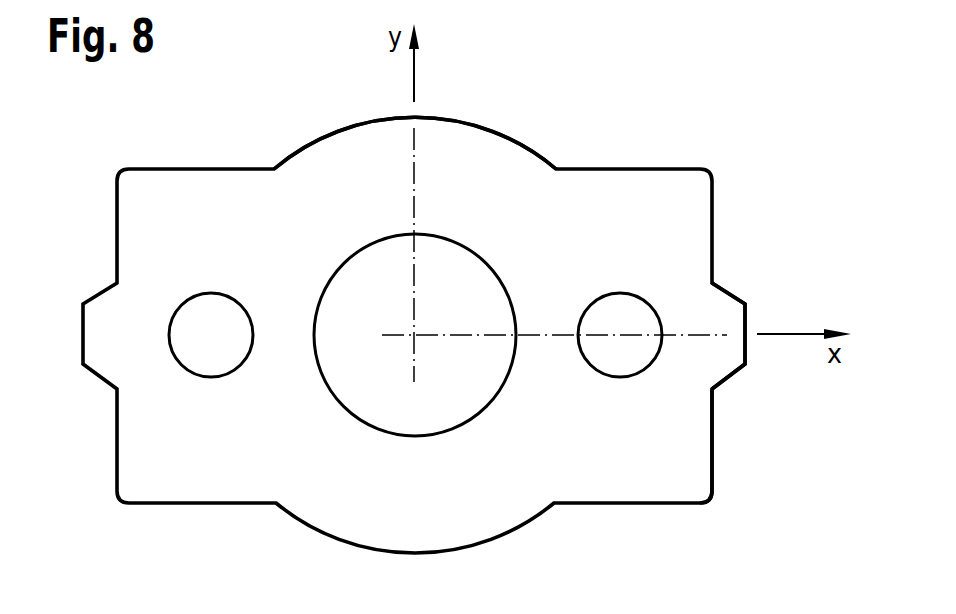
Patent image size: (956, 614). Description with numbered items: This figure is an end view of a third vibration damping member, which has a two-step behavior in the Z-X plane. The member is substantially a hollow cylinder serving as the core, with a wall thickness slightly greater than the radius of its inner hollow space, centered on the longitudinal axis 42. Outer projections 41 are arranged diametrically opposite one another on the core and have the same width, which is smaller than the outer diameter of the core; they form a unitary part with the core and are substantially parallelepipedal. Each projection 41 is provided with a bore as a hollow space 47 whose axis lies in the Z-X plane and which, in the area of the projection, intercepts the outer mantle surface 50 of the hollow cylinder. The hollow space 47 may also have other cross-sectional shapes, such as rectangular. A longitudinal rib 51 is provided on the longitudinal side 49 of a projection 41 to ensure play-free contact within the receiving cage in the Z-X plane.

The projection 41 is at (661, 223).
The longitudinal axis 42 is at (415, 336).
The hollow space 47 is at (643, 315).
The longitudinal side 49 is at (712, 452).
The outer mantle surface 50 is at (512, 129).
The longitudinal rib 51 is at (733, 320).